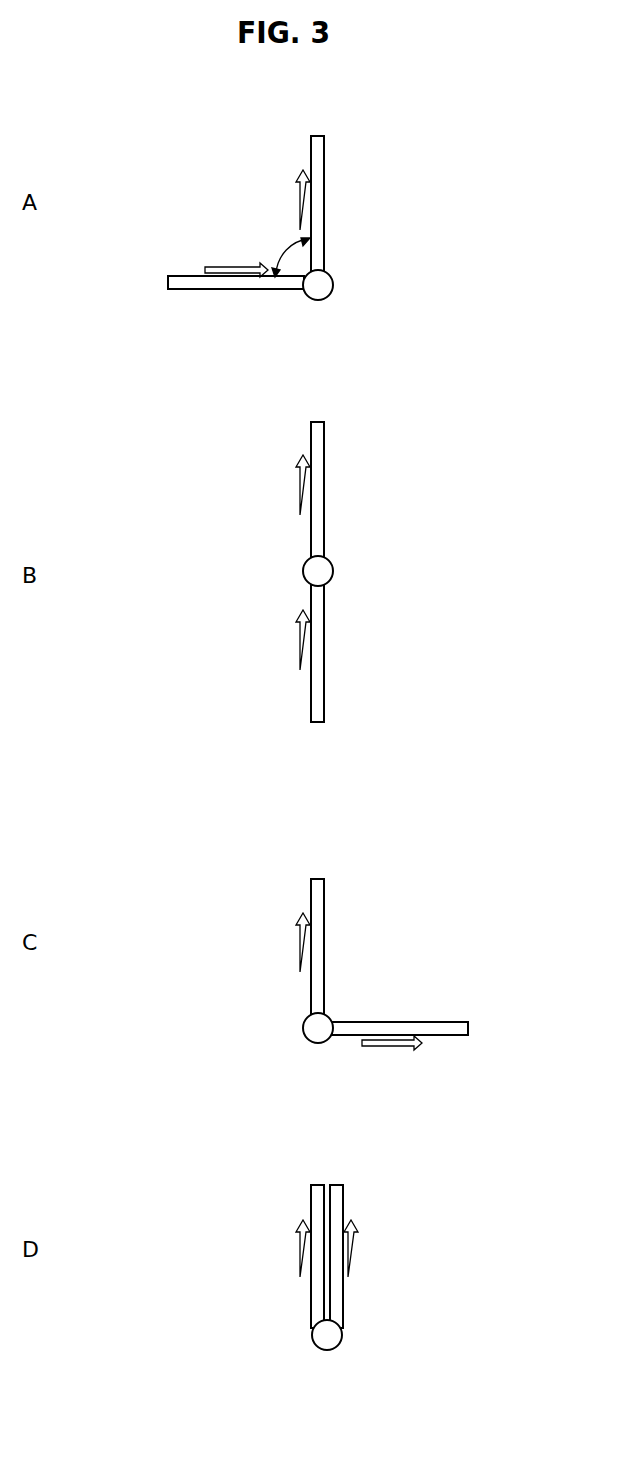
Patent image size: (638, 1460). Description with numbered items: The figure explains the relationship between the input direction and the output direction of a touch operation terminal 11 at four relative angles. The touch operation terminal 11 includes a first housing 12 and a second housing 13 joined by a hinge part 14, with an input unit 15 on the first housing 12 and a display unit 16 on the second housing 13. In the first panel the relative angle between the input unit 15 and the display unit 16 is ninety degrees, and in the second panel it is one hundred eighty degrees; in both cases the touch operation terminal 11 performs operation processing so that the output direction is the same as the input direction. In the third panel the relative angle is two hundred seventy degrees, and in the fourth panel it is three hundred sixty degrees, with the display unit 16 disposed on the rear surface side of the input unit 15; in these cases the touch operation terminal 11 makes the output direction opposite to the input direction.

The touch operation terminal 11 is at (367, 183).
The first housing 12 is at (168, 283).
The second housing 13 is at (318, 136).
The hinge part 14 is at (320, 285).
The input unit 15 is at (188, 276).
The display unit 16 is at (311, 153).